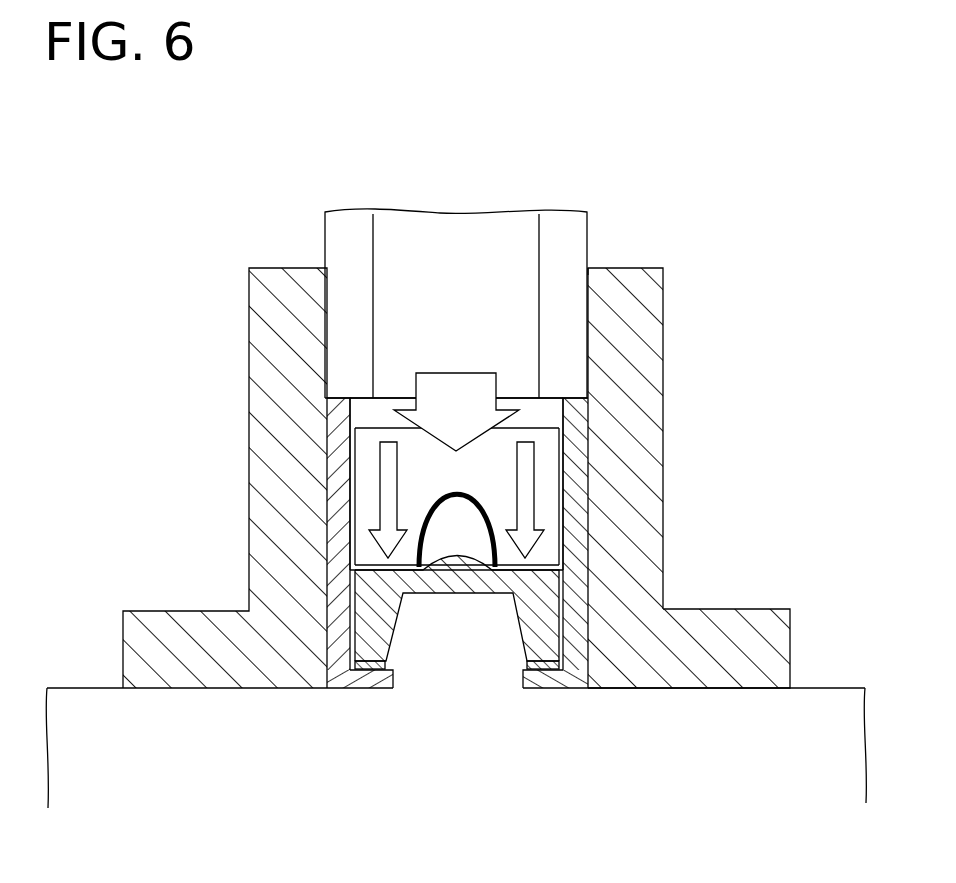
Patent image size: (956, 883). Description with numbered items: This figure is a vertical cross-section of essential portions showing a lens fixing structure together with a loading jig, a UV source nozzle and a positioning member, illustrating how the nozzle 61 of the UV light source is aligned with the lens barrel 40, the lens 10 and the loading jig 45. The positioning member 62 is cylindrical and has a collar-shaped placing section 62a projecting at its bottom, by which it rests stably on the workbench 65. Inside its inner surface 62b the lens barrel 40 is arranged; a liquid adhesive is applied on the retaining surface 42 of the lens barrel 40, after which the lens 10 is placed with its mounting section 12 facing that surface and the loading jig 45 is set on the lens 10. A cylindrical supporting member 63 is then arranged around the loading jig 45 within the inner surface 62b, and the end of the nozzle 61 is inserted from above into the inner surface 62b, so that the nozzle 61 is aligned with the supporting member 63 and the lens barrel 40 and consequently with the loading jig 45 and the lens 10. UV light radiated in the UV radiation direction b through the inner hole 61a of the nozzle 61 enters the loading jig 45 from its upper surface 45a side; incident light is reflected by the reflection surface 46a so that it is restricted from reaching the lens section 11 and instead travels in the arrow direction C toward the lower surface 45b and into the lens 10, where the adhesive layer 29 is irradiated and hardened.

The nozzle 61 is at (313, 244).
The inner hole 61a is at (498, 235).
The UV radiation direction b is at (440, 388).
The positioning member 62 is at (241, 299).
The placing section 62a is at (740, 672).
The inner surface 62b is at (588, 275).
The cylindrical supporting member 63 is at (334, 467).
The loading jig 45 is at (550, 472).
The upper surface 45a is at (548, 420).
The lower surface 45b is at (352, 595).
The reflection surface 46a is at (492, 522).
The arrow direction C is at (525, 487).
The lens section 11 is at (461, 581).
The lens 10 is at (500, 609).
The mounting section 12 is at (388, 625).
The adhesive layer 29 is at (396, 668).
The retaining surface 42 is at (526, 665).
The lens barrel 40 is at (578, 700).
The workbench 65 is at (842, 677).